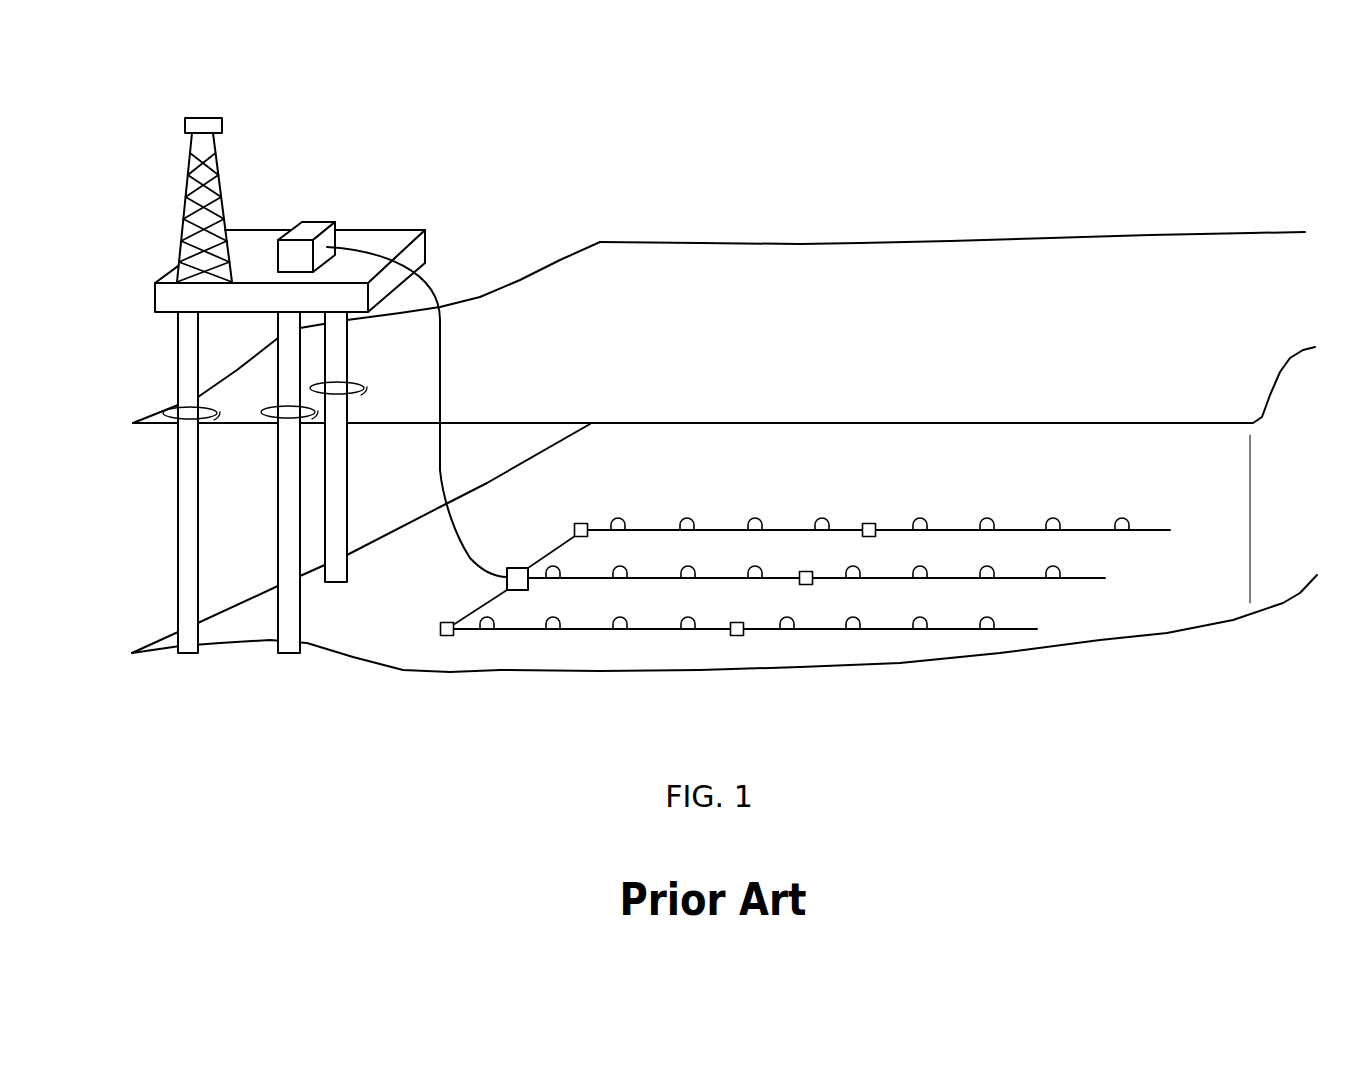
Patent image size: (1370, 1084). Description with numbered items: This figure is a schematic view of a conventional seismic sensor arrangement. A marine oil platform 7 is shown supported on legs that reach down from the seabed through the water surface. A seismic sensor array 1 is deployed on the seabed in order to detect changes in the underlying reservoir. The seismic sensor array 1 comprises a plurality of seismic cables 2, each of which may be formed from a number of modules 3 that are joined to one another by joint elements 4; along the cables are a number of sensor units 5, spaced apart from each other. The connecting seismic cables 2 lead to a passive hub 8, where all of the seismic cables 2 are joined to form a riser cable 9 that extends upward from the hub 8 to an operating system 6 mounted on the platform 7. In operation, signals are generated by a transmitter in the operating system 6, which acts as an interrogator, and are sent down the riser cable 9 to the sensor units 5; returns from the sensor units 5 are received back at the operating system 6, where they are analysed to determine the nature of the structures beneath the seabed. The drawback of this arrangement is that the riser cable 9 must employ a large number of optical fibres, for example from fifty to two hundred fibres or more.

The seismic sensor array 1 is at (885, 338).
The seismic cables 2 is at (783, 604).
The modules 3 is at (830, 512).
The joint elements 4 is at (872, 523).
The sensor units 5 is at (1054, 515).
The operating system 6 is at (317, 222).
The marine oil platform 7 is at (155, 183).
The passive hub 8 is at (520, 568).
The cable 9 is at (443, 372).